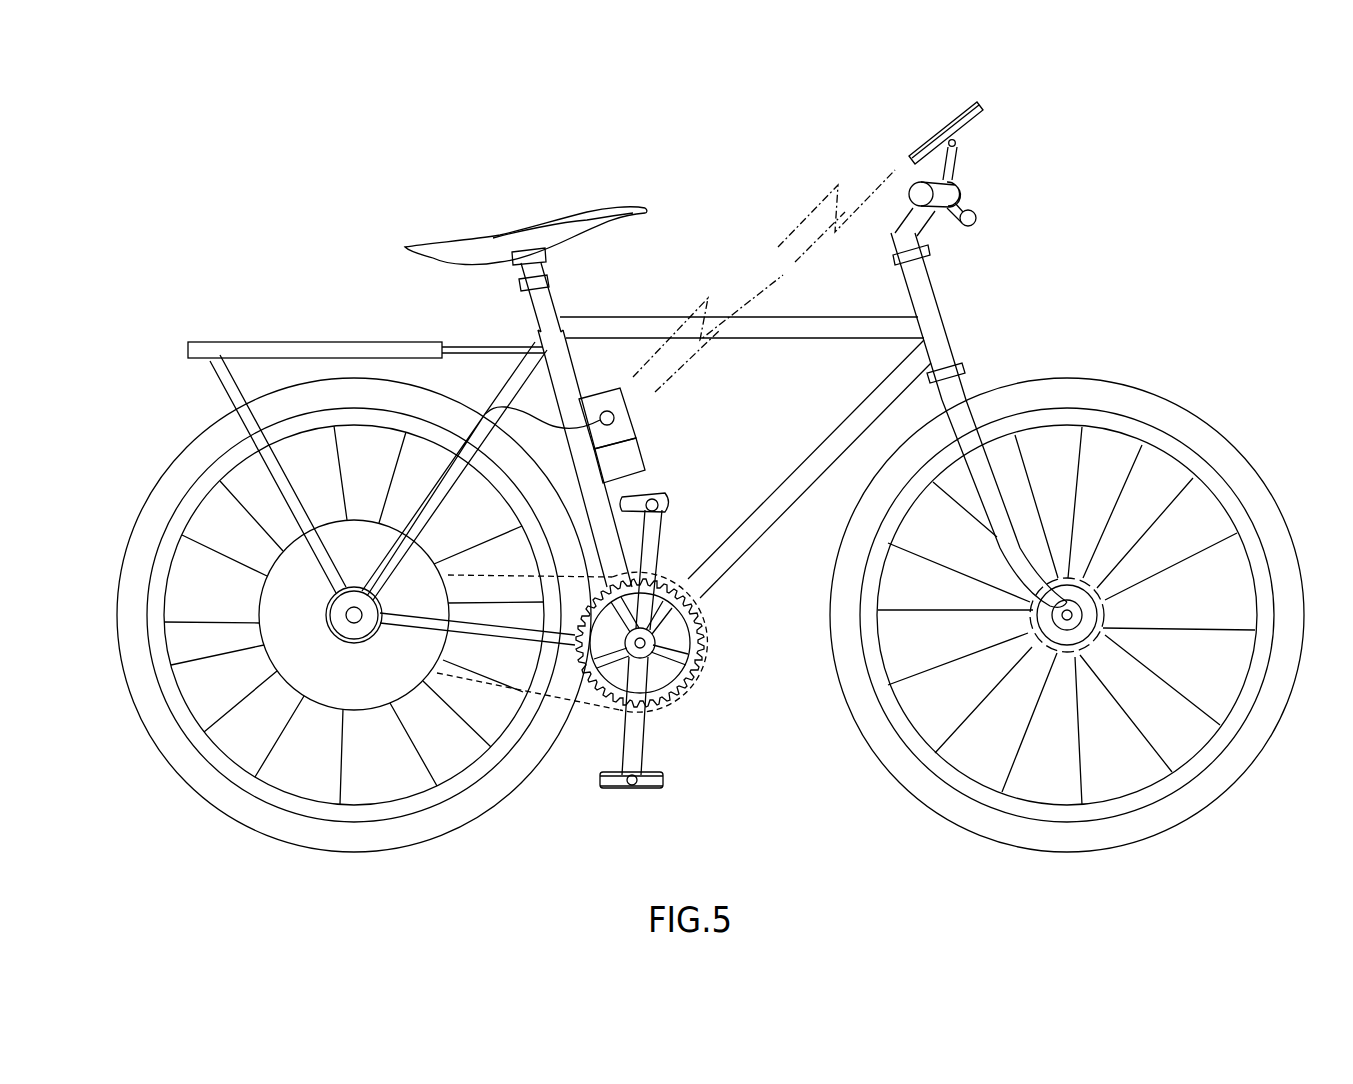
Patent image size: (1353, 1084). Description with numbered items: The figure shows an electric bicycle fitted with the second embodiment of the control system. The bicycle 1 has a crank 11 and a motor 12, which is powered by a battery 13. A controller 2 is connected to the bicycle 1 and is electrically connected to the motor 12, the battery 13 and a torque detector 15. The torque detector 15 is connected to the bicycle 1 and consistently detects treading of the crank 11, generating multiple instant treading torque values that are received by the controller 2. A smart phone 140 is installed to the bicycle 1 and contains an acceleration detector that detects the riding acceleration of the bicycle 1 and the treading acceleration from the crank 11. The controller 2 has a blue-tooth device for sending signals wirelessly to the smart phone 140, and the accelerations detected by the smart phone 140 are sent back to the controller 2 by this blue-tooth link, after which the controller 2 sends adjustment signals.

The bicycle 1 is at (362, 220).
The controller 2 is at (610, 397).
The crank 11 is at (632, 745).
The motor 12 is at (287, 580).
The battery 13 is at (628, 458).
The torque detector 15 is at (632, 786).
The smart phone 140 is at (922, 145).